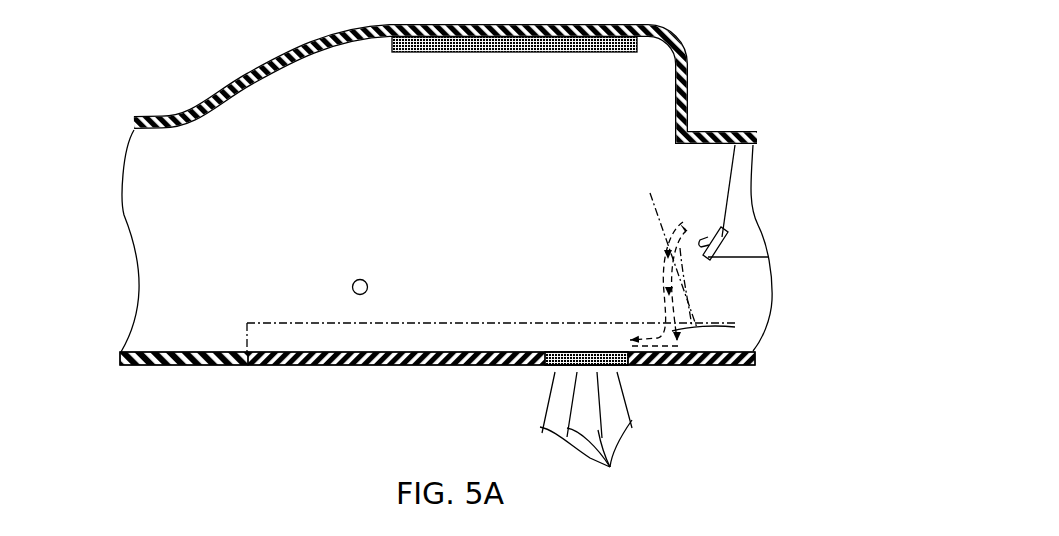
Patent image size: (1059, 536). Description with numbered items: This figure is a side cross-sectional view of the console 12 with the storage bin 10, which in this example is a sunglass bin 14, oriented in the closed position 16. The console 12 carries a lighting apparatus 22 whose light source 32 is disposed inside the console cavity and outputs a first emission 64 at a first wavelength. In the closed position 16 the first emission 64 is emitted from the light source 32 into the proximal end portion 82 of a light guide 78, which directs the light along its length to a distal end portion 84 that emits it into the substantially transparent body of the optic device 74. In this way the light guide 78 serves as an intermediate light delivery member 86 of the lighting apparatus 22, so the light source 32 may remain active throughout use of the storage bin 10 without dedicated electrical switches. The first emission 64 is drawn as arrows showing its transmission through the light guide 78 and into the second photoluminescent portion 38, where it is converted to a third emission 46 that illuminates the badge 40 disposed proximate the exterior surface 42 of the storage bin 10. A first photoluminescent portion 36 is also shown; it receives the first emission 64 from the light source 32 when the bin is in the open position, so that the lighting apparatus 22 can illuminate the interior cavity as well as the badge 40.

The console 12 is at (479, 83).
The lighting apparatus 22 is at (735, 72).
The first photoluminescent portion 36 is at (405, 54).
The proximal end portion 82 is at (693, 218).
The light source 32 is at (714, 248).
The intermediate light delivery member 86 is at (653, 267).
The distal end portion 84 is at (615, 343).
The light guide 78 is at (673, 284).
The first emission 64 is at (672, 331).
The optic device 74 is at (560, 352).
The storage bin 10 is at (199, 385).
The sunglass bin 14 is at (278, 368).
The exterior surface 42 is at (386, 375).
The closed position 16 is at (437, 412).
The second photoluminescent portion 38 is at (630, 373).
The badge 40 is at (558, 370).
The third emission 46 is at (588, 428).